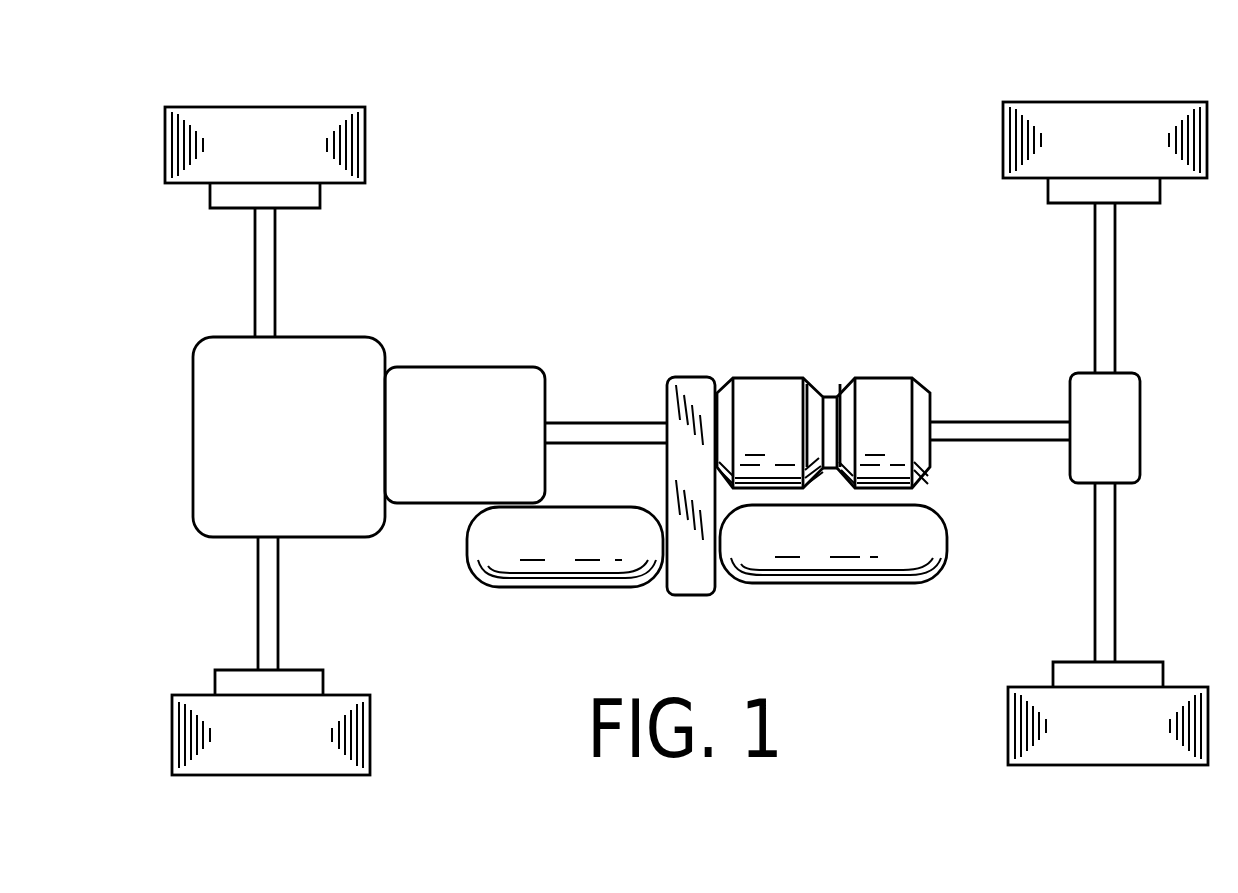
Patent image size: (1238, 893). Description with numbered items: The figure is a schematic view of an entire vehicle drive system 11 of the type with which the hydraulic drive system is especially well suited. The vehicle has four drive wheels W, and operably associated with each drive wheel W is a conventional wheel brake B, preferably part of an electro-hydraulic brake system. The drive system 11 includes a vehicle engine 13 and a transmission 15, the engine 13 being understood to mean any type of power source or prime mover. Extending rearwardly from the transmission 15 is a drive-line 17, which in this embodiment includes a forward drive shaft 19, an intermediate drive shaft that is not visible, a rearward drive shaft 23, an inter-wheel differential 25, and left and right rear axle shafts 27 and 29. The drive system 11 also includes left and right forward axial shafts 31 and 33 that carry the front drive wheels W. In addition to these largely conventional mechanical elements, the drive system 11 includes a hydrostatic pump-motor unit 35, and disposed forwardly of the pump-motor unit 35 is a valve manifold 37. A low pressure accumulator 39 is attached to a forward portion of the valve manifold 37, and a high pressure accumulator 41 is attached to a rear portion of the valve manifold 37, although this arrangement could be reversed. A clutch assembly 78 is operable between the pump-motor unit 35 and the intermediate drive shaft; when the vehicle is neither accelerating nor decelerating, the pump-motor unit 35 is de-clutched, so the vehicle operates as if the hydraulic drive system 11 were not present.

The vehicle drive system 11 is at (678, 328).
The vehicle engine 13 is at (330, 352).
The transmission 15 is at (452, 385).
The drive-line 17 is at (634, 410).
The forward drive shaft 19 is at (582, 438).
The rearward drive shaft 23 is at (968, 433).
The inter-wheel differential 25 is at (1123, 443).
The left rear axle shaft 27 is at (1107, 555).
The right rear axle shaft 29 is at (1105, 315).
The left forward axial shaft 31 is at (268, 610).
The right forward axial shaft 33 is at (270, 292).
The hydrostatic pump-motor unit 35 is at (869, 365).
The valve manifold 37 is at (692, 585).
The low pressure accumulator 39 is at (515, 588).
The high pressure accumulator 41 is at (808, 583).
The clutch assembly 78 is at (762, 395).
The drive wheel W is at (293, 128).
The wheel brake B is at (300, 200).